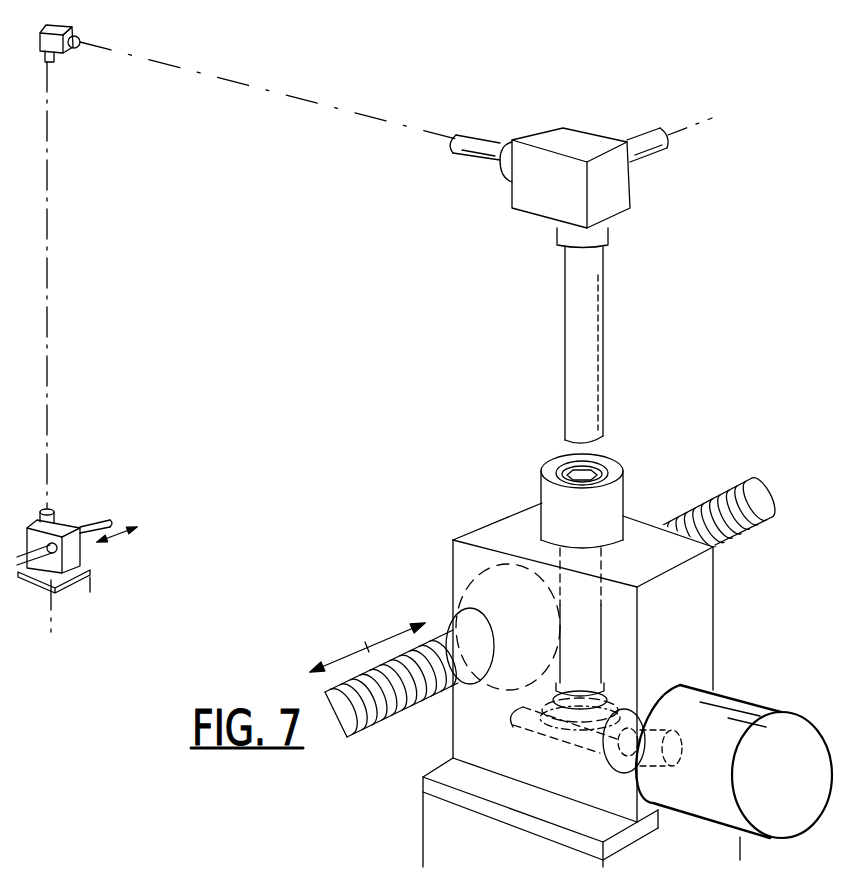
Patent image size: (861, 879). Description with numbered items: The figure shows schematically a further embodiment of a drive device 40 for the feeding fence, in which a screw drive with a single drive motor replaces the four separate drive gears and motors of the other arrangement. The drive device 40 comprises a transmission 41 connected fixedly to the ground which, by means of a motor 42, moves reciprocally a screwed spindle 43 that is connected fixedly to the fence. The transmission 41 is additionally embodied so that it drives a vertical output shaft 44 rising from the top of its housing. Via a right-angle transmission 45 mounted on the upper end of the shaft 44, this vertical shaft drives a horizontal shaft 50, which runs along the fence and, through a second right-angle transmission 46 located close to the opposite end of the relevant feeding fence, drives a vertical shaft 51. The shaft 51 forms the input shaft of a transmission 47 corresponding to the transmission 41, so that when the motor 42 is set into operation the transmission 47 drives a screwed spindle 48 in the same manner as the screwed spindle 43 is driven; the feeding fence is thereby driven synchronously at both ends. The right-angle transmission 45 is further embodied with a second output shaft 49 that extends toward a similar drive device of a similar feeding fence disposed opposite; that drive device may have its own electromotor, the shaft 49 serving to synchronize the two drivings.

The drive device 40 is at (664, 475).
The transmission 41 is at (688, 637).
The motor 42 is at (782, 752).
The screwed spindle 43 is at (740, 538).
The vertical output shaft 44 is at (583, 340).
The right-angle transmission 45 is at (582, 145).
The right-angle transmission 46 is at (55, 24).
The transmission 47 is at (75, 552).
The screwed spindle 48 is at (97, 520).
The second output shaft 49 is at (648, 148).
The horizontal shaft 50 is at (481, 148).
The vertical shaft 51 is at (50, 328).